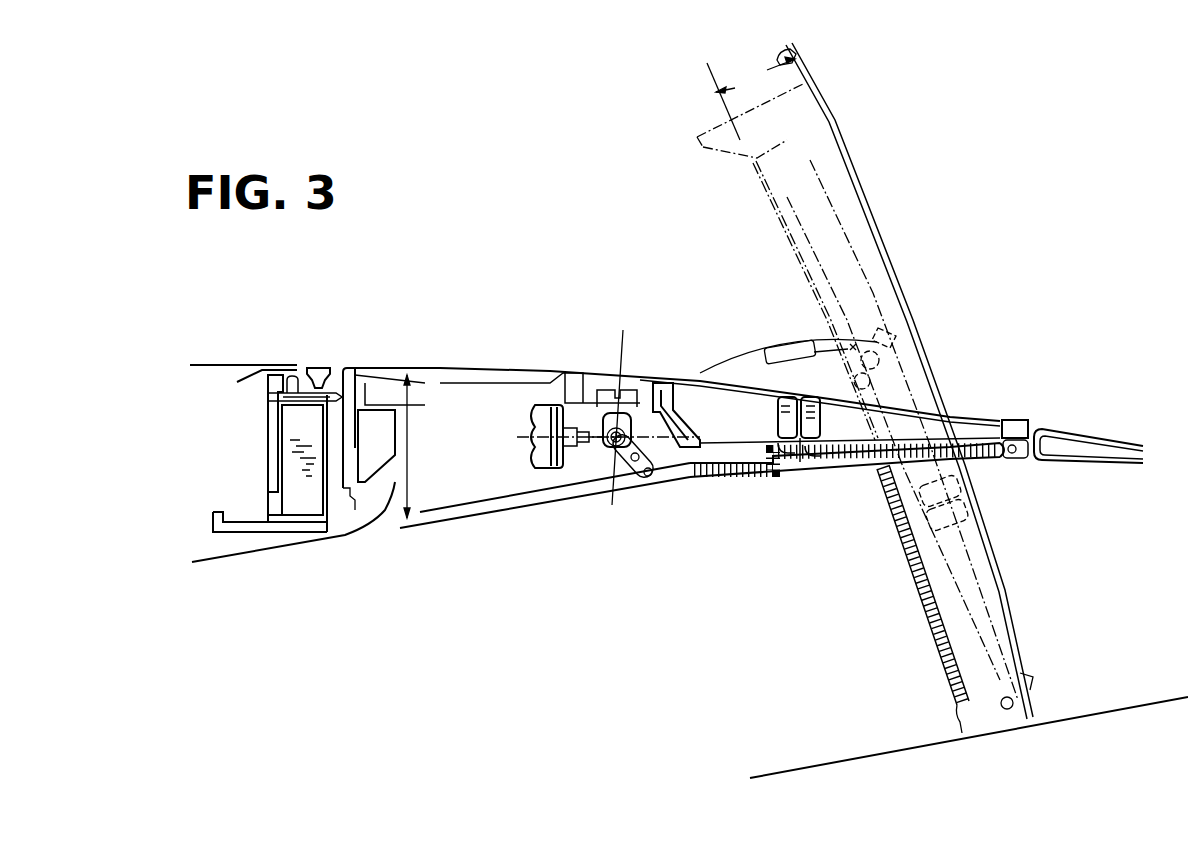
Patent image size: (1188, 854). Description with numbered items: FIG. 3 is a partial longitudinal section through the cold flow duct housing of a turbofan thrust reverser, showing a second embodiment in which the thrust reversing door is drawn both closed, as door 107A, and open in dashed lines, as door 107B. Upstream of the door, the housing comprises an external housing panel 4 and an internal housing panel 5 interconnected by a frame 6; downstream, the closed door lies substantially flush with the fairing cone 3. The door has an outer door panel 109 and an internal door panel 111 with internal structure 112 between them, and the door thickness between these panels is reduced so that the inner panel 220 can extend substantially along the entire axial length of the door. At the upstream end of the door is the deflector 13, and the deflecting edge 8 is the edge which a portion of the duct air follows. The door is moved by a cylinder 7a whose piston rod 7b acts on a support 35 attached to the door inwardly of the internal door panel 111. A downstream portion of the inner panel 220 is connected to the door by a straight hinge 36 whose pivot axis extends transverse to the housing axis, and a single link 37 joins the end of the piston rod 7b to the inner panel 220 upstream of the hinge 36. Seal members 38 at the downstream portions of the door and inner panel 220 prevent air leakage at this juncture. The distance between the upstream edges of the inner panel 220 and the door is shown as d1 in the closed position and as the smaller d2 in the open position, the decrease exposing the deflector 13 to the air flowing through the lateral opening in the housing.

The downstream fairing cone 3 is at (1093, 447).
The external housing panel 4 is at (237, 365).
The internal housing panel 5 is at (243, 553).
The frame 6 is at (268, 512).
The cylinder 7a is at (538, 410).
The piston rod 7b is at (618, 450).
The deflecting edge 8 is at (385, 515).
The deflector 13 is at (664, 88).
The support 35 is at (616, 428).
The straight hinge 36 is at (800, 465).
The single link 37 is at (655, 482).
The seal members 38 is at (1027, 433).
The thrust reversing door in closed position 107A is at (427, 376).
The thrust reversing door in open position 107B is at (936, 383).
The outer door panel 109 is at (373, 366).
The internal door panel 111 is at (472, 407).
The drive bracket 112 is at (668, 385).
The inner panel 220 is at (697, 487).
The distance between upstream edges (door closed) d1 is at (407, 446).
The distance between upstream edges (door open) d2 is at (751, 98).